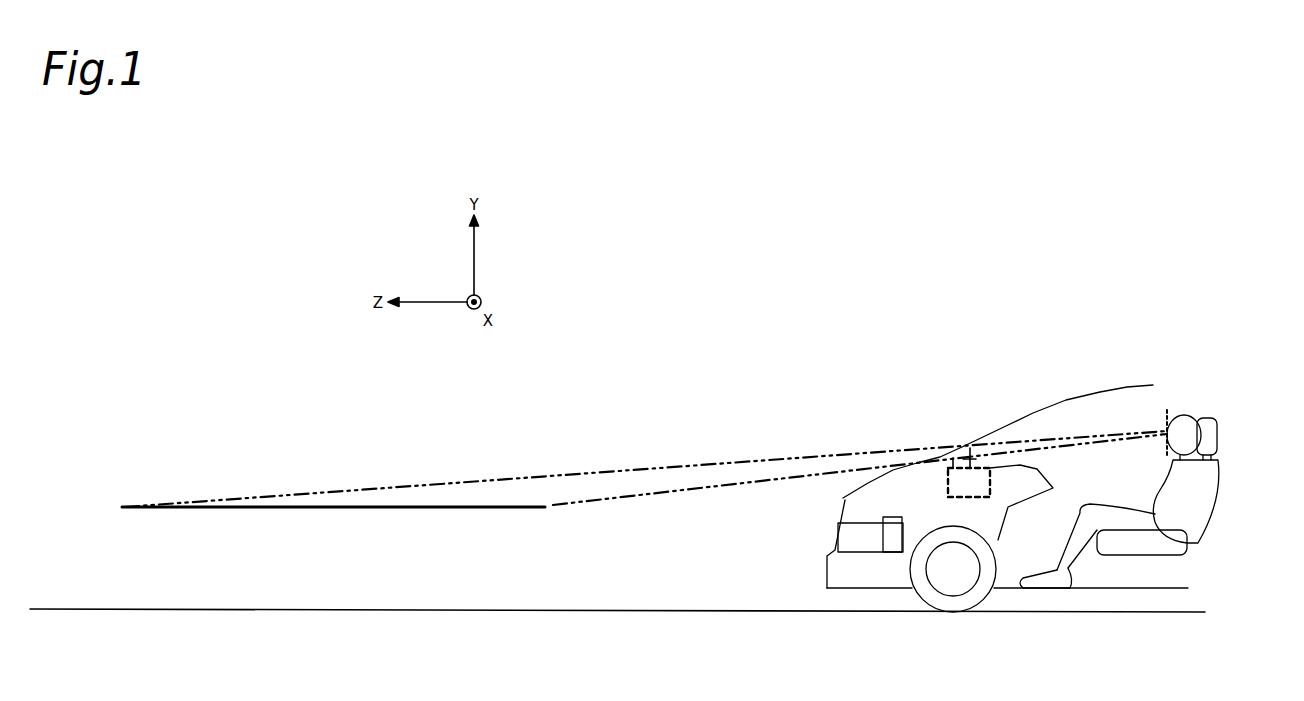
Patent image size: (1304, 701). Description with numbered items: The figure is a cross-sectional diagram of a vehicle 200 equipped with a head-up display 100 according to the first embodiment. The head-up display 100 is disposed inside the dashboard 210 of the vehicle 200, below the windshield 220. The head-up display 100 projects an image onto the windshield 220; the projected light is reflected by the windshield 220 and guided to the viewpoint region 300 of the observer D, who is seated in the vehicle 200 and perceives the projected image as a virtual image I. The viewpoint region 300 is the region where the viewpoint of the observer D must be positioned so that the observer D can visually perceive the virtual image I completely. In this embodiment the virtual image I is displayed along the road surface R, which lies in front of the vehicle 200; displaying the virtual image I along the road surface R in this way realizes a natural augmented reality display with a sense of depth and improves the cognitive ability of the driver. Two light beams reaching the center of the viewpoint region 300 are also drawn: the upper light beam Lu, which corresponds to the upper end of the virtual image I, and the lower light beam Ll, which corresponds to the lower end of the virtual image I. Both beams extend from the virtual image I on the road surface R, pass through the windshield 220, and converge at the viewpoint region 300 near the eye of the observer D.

The head-up display 100 is at (948, 484).
The vehicle 200 is at (827, 570).
The dashboard 210 is at (1033, 467).
The windshield 220 is at (1030, 415).
The viewpoint region 300 is at (1169, 413).
The observer D is at (1169, 431).
The virtual image I is at (423, 508).
The road surface R is at (460, 608).
The upper light beam Lu is at (627, 470).
The lower light beam Ll is at (680, 490).